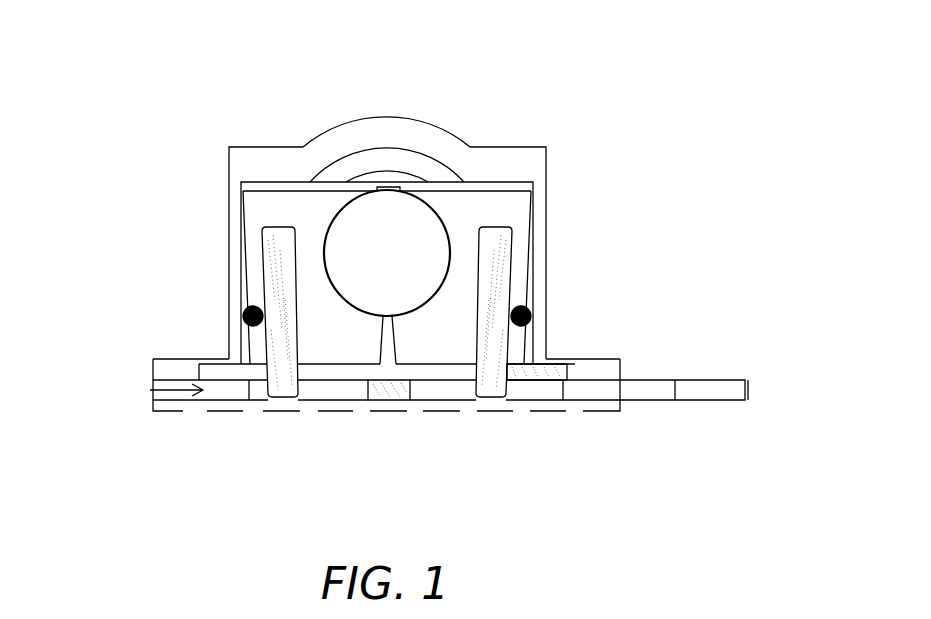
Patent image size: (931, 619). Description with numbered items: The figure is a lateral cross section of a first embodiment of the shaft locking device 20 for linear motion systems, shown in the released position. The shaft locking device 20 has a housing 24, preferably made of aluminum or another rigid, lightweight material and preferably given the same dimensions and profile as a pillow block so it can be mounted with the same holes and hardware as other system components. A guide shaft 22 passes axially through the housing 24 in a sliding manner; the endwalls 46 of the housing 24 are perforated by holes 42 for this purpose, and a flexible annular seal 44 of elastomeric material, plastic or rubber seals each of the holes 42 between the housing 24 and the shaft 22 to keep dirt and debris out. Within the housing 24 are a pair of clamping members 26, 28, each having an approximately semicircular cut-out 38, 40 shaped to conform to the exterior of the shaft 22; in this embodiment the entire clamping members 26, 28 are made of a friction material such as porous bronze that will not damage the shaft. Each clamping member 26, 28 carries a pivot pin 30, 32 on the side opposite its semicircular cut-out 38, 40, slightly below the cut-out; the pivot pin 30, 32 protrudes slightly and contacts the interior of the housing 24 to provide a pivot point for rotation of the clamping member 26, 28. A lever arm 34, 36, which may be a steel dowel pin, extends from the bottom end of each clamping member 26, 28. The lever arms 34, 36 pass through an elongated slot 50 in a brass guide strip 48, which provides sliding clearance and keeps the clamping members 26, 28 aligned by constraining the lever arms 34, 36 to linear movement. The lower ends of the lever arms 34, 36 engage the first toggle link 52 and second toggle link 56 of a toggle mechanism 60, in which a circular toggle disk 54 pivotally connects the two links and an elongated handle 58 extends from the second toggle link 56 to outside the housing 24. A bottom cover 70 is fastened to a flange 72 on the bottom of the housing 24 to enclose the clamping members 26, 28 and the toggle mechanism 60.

The shaft locking device 20 is at (560, 147).
The guide shaft 22 is at (385, 210).
The housing 24 is at (547, 185).
The clamping member 26 is at (278, 209).
The clamping member 28 is at (497, 208).
The pivot pin 30 is at (243, 317).
The pivot pin 32 is at (527, 310).
The lever arm 34 is at (287, 390).
The lever arm 36 is at (489, 388).
The semicircular cut-out 38 is at (337, 212).
The semicircular cut-out 40 is at (442, 223).
The holes 42 is at (366, 174).
The flexible annular seal 44 is at (383, 180).
The endwalls 46 is at (342, 172).
The guide strip 48 is at (553, 372).
The elongated slot 50 is at (517, 368).
The first toggle link 52 is at (328, 388).
The toggle disk 54 is at (388, 388).
The second toggle link 56 is at (440, 390).
The elongated handle 58 is at (698, 390).
The toggle mechanism 60 is at (150, 390).
The bottom cover 70 is at (558, 410).
The flange 72 is at (185, 370).